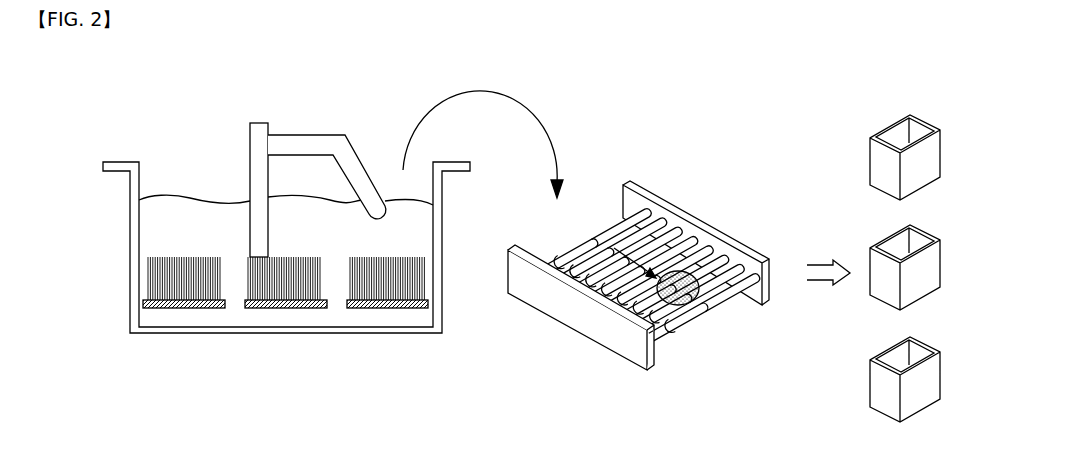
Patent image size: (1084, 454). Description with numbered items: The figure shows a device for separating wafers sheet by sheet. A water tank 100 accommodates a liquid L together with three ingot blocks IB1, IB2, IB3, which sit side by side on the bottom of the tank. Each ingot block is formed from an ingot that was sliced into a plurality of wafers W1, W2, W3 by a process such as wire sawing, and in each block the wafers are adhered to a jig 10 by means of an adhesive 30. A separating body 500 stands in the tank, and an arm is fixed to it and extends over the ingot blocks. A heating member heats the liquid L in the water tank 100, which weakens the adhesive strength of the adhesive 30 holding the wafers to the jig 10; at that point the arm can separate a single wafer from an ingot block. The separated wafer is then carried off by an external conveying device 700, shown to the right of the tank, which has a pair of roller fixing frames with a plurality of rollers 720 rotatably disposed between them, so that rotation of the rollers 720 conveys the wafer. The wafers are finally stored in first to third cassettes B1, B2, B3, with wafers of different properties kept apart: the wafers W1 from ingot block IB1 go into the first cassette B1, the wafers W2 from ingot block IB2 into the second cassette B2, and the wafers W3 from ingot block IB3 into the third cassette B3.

The water tank 100 is at (127, 162).
The liquid L is at (179, 200).
The separating body 500 is at (258, 126).
The element arm is at (314, 135).
The wafers W1 is at (150, 258).
The wafers W2 is at (322, 257).
The wafers W3 is at (424, 257).
The jig 10 is at (266, 319).
The adhesive 30 is at (143, 300).
The ingot block IB1 is at (388, 311).
The ingot block IB2 is at (288, 311).
The ingot block IB3 is at (205, 311).
The conveying device 700 is at (655, 260).
The rollers 720 is at (588, 245).
The element wafer is at (698, 294).
The first cassette B1 is at (925, 124).
The second cassette B2 is at (910, 265).
The third cassette B3 is at (910, 377).